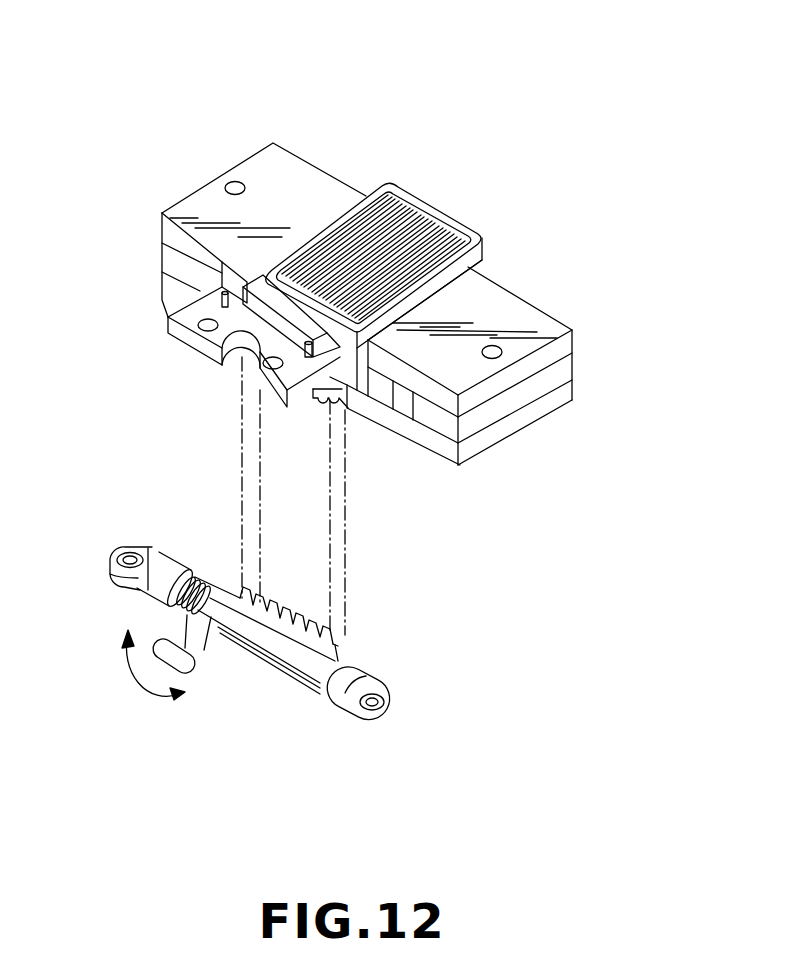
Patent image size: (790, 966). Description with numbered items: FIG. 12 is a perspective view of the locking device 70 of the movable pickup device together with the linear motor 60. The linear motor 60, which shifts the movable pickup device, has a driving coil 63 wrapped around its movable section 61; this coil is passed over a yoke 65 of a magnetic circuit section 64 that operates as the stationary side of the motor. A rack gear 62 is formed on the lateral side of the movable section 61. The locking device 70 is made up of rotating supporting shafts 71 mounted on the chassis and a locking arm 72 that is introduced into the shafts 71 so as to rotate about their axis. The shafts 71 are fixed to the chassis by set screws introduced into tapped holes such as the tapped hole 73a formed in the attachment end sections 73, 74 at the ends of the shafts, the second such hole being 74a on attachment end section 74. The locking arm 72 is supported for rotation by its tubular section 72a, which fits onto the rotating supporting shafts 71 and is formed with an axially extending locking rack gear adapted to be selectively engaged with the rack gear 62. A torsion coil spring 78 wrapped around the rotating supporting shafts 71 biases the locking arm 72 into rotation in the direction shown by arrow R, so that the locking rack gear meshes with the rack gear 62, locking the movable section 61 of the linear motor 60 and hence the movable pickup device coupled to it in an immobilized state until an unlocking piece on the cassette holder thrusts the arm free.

The linear motor 60 is at (391, 150).
The movable section 61 is at (473, 232).
The rack gear 62 is at (322, 400).
The driving coil 63 is at (402, 232).
The magnetic circuit section 64 is at (532, 323).
The yoke 65 is at (161, 223).
The locking device 70 is at (295, 712).
The rotating supporting shafts 71 is at (142, 594).
The locking arm 72 is at (253, 636).
The tubular section 72a is at (236, 595).
The attachment end section 73 is at (112, 562).
The tapped hole 73a is at (140, 553).
The attachment end section 74 is at (397, 702).
The lug hole 74a is at (373, 705).
The torsion coil spring 78 is at (190, 573).